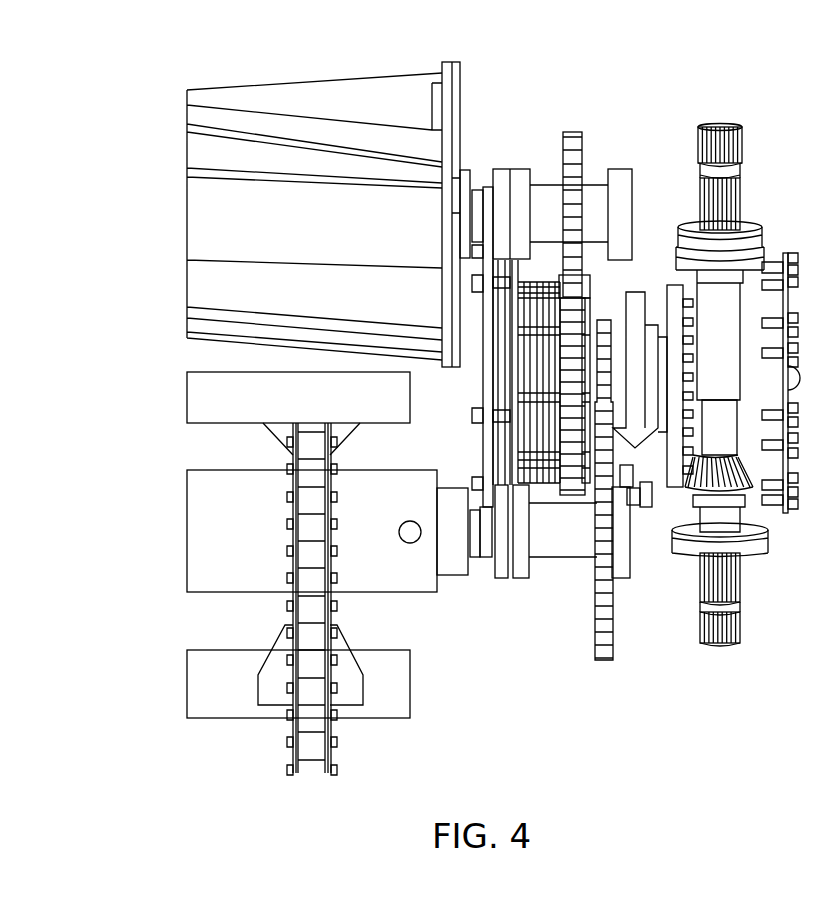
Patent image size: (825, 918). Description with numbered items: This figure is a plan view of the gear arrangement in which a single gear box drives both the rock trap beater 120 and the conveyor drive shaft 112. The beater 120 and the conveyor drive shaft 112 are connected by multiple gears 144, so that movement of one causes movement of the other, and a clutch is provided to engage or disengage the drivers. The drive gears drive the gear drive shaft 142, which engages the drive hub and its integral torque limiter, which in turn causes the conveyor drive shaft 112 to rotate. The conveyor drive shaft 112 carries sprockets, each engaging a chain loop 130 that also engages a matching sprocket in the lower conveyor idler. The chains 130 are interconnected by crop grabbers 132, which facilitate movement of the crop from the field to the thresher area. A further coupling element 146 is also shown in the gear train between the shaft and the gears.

The conveyor drive shaft 112 is at (212, 541).
The rock trap beater 120 is at (340, 90).
The chain loop 130 is at (318, 742).
The crop grabber 132 is at (212, 687).
The gear drive shaft 142 is at (477, 547).
The gears 144 is at (603, 642).
The gear coupling 146 is at (488, 193).